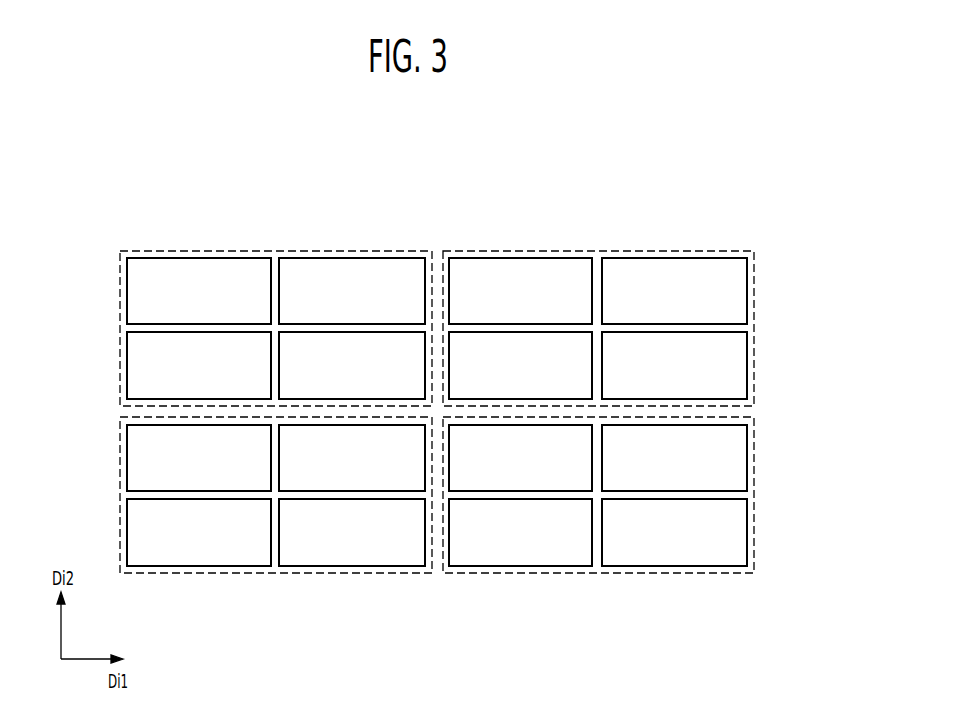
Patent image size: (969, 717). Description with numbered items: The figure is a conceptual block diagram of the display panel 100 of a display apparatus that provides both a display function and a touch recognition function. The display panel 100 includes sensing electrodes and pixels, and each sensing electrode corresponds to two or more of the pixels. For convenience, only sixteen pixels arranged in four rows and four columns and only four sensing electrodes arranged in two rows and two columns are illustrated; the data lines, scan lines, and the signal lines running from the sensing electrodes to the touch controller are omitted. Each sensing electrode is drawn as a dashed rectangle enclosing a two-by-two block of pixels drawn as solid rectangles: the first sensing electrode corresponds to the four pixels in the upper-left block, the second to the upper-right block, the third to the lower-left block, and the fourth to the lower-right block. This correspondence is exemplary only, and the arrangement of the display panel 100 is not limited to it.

The display panel 100 is at (780, 194).